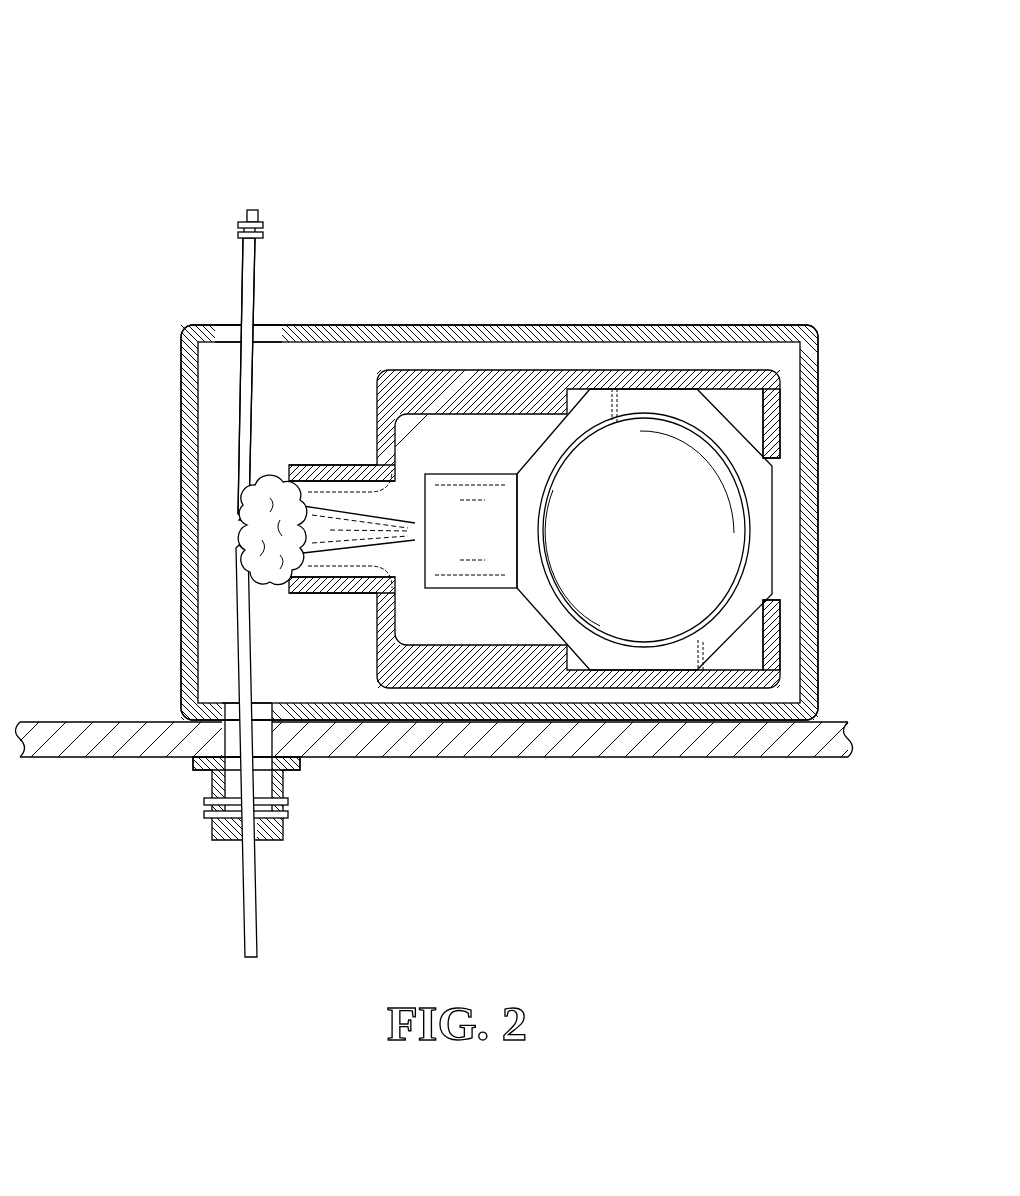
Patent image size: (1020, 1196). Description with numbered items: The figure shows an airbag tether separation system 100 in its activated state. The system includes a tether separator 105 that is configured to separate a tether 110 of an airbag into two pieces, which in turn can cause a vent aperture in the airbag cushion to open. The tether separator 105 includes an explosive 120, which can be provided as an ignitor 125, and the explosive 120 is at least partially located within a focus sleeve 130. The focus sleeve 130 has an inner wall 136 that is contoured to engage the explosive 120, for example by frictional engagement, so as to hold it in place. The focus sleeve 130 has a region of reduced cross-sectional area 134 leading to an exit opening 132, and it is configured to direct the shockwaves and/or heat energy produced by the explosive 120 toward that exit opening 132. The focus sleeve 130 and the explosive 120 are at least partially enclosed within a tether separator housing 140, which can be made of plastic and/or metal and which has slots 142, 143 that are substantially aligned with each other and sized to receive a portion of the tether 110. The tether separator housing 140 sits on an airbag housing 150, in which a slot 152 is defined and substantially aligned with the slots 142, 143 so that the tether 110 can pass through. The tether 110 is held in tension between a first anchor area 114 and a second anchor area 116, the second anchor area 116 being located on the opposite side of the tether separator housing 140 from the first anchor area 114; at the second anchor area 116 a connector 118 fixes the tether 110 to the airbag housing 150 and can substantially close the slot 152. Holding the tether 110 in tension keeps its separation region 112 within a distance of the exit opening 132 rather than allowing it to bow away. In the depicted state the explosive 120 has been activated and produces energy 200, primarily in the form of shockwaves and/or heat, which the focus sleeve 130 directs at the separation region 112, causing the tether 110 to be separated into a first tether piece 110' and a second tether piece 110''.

The airbag tether separation system 100 is at (162, 32).
The tether separator 105 is at (636, 312).
The tether 110 is at (184, 361).
The first tether piece 110' is at (179, 379).
The second tether piece 110'' is at (178, 751).
The separation region 112 is at (225, 510).
The first anchor area 114 is at (233, 215).
The second anchor area 116 is at (196, 810).
The connector 118 is at (212, 786).
The explosive 120 is at (742, 425).
The ignitor 125 is at (783, 510).
The focus sleeve 130 is at (487, 370).
The exit opening 132 is at (270, 592).
The region of reduced cross-sectional area 134 is at (340, 465).
The inner wall 136 is at (720, 666).
The tether separator housing 140 is at (818, 636).
The slot 142 is at (225, 312).
The slot 143 is at (262, 716).
The airbag housing 150 is at (793, 757).
The slot 152 is at (259, 781).
The energy 200 is at (286, 497).